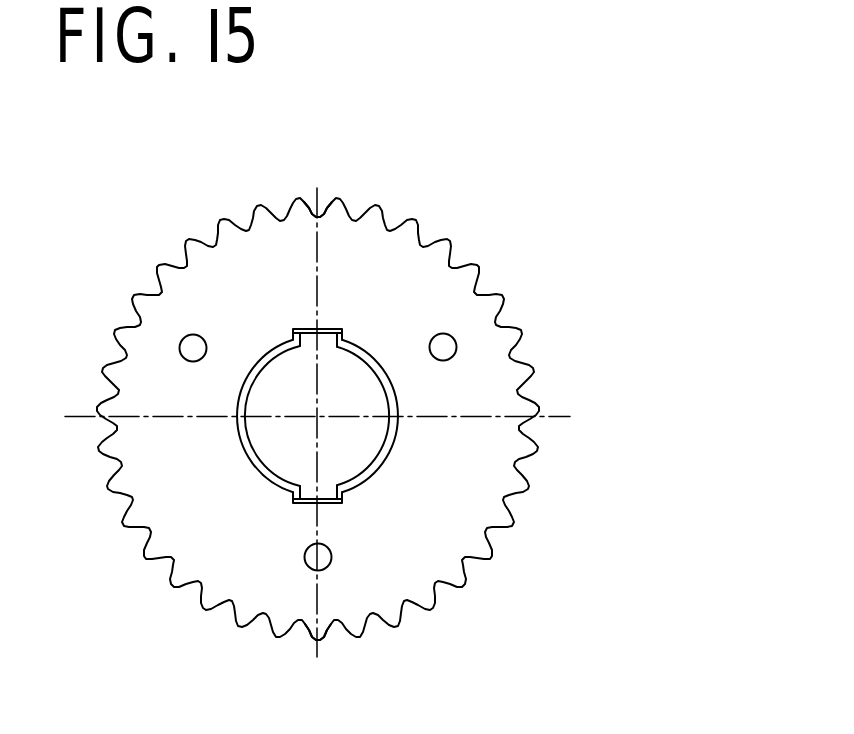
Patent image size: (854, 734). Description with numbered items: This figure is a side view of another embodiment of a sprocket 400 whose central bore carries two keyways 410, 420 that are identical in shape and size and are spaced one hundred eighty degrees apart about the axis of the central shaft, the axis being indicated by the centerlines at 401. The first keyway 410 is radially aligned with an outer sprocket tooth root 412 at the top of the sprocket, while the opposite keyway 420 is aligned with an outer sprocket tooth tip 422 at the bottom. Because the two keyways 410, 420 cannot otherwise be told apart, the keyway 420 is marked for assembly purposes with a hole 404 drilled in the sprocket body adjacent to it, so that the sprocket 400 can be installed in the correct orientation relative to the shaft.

The sprocket 400 is at (197, 282).
The sprocket axis 401 is at (317, 417).
The hole 404 is at (332, 560).
The keyway 410 is at (307, 327).
The outer sprocket tooth root 412 is at (316, 216).
The keyway 420 is at (297, 503).
The outer sprocket tooth tip 422 is at (317, 641).